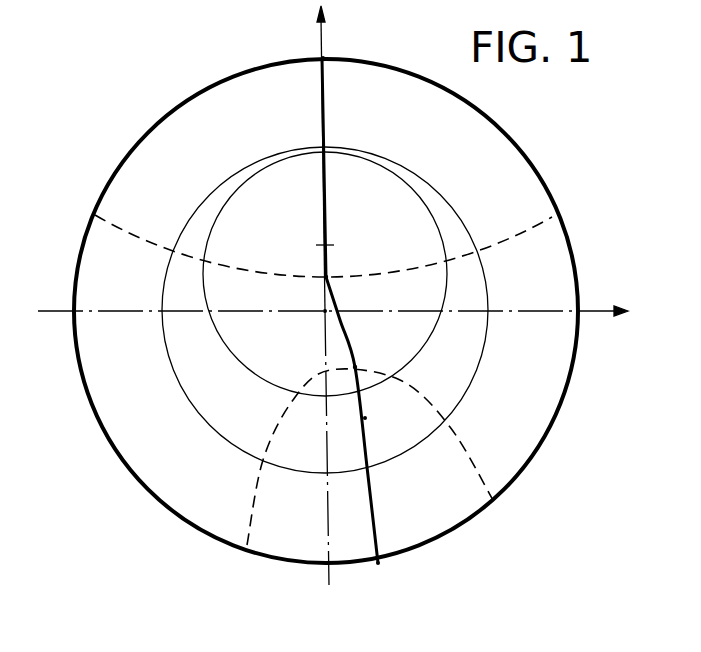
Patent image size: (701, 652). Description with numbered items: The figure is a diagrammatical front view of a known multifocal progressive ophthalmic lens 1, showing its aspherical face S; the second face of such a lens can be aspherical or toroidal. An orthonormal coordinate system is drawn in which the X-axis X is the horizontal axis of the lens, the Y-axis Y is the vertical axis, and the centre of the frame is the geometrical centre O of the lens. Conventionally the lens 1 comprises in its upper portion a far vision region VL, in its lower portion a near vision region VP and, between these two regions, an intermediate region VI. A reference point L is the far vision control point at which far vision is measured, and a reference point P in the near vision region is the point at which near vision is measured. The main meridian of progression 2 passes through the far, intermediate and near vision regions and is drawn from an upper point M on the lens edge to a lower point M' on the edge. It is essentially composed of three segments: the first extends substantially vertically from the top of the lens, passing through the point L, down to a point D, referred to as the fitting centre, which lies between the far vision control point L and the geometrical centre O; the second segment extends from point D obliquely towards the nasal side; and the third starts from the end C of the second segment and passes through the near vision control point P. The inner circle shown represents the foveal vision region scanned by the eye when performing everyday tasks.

The lens 1 is at (100, 157).
The main meridian of progression 2 is at (320, 98).
The upper end point of meridian M is at (366, 46).
The lower end point of meridian M' is at (403, 581).
The aspherical surface of the lens S is at (130, 415).
The far vision region VL is at (477, 160).
The intermediate region VI is at (543, 358).
The near vision region VP is at (450, 497).
The far vision control point L is at (328, 244).
The fitting centre D is at (328, 273).
The geometrical centre O is at (323, 310).
The end of the second segment C is at (352, 366).
The near vision control point P is at (365, 418).
The X-axis X is at (334, 327).
The Y-axis Y is at (329, 292).